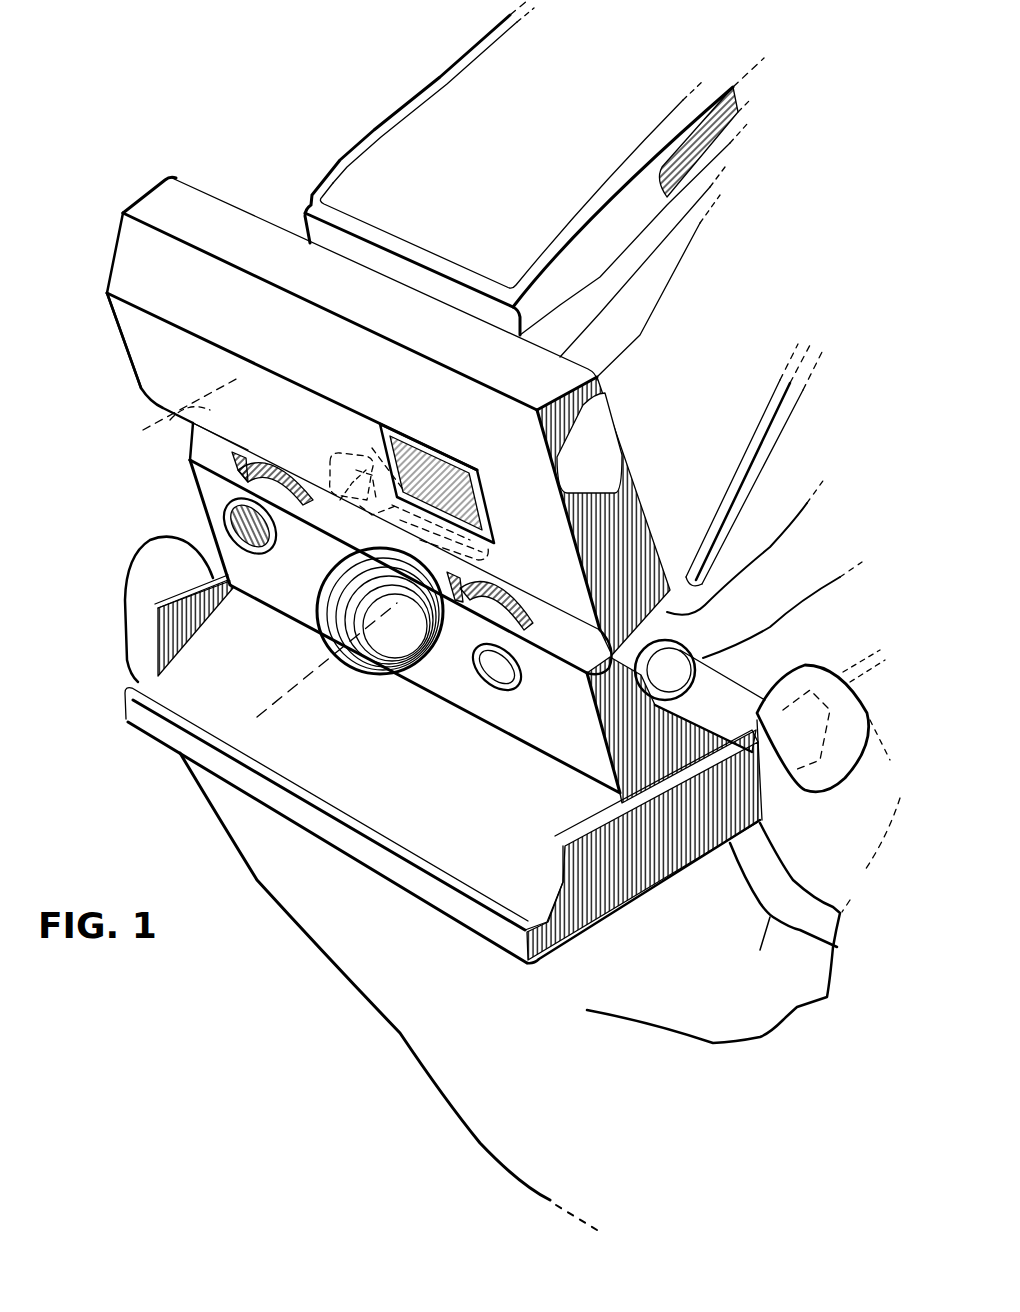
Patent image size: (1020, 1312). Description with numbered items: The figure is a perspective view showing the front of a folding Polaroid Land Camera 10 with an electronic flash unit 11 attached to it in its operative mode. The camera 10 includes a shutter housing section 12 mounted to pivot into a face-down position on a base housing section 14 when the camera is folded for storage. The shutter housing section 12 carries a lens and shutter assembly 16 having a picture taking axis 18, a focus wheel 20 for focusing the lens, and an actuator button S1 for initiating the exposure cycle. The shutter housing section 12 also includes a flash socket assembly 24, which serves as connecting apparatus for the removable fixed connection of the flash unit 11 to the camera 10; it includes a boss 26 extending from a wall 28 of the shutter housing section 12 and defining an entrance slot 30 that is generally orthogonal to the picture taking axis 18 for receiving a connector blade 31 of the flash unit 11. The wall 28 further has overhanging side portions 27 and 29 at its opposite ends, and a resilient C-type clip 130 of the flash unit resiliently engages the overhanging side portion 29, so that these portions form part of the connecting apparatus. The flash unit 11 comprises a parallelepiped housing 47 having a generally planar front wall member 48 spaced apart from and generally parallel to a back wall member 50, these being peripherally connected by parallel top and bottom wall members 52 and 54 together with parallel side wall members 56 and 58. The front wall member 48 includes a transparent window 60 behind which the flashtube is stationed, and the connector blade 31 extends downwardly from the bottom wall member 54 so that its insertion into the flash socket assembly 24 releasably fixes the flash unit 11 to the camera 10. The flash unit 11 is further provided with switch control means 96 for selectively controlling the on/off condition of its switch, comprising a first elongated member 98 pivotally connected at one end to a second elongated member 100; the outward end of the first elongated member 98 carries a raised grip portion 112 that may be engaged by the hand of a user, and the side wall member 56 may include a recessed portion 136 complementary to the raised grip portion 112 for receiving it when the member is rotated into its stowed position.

The camera 10 is at (151, 752).
The electronic flash unit 11 is at (104, 245).
The shutter housing section 12 is at (478, 703).
The base housing section 14 is at (680, 852).
The lens and shutter assembly 16 is at (360, 612).
The picture taking axis 18 is at (298, 688).
The focus wheel 20 is at (250, 470).
The flash socket assembly 24 is at (350, 460).
The boss 26 is at (358, 500).
The overhanging side portion 27 is at (188, 426).
The wall 28 is at (150, 430).
The overhanging side portion 29 is at (585, 678).
The entrance slot 30 is at (373, 474).
The connector blade 31 is at (490, 550).
The parallelepiped housing 47 is at (236, 200).
The front wall member 48 is at (143, 352).
The back wall member 50 is at (640, 497).
The top wall member 52 is at (178, 182).
The bottom wall member 54 is at (538, 608).
The side wall member 56 is at (598, 404).
The side wall member 58 is at (157, 195).
The transparent window 60 is at (437, 483).
The switch control means 96 is at (697, 747).
The first elongated member 98 is at (732, 678).
The second elongated member 100 is at (672, 603).
The raised grip portion 112 is at (828, 678).
The resilient C-type clip 130 is at (592, 664).
The recessed portion 136 is at (557, 458).
The actuator button S1 is at (247, 587).